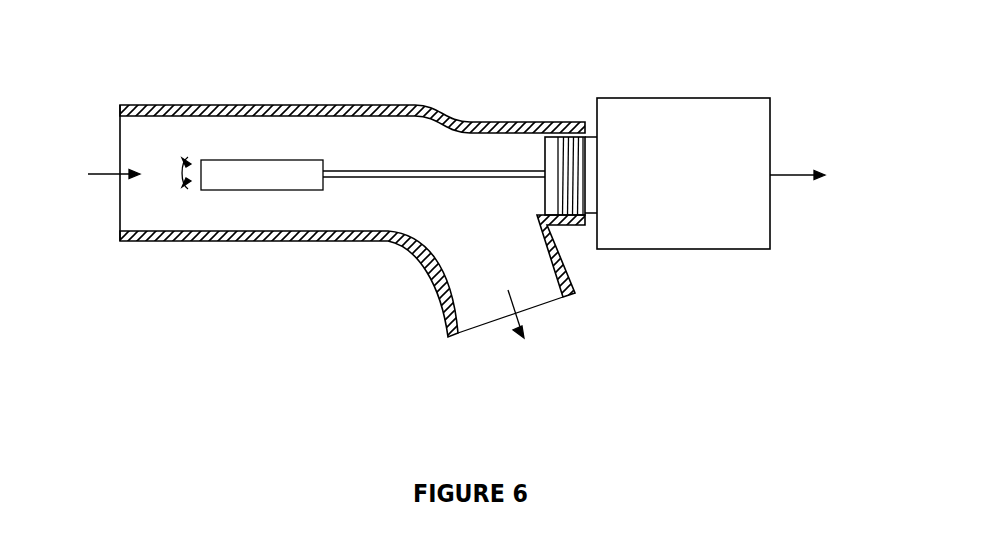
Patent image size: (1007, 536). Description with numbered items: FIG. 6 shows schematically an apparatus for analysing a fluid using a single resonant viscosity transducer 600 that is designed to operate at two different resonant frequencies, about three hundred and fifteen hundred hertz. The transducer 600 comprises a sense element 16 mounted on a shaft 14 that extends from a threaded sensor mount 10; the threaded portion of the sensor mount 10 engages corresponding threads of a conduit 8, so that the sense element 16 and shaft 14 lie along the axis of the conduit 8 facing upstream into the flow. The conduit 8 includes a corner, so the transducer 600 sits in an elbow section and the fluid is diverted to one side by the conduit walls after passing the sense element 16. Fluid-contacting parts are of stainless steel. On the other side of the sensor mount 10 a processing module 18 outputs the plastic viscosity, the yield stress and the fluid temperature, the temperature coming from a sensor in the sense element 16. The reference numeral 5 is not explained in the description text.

The conduit 8 is at (170, 105).
The flow channel 5 is at (306, 254).
The sense element 16 is at (252, 159).
The shaft 14 is at (370, 168).
The threaded sensor mount 10 is at (545, 197).
The processing module 18 is at (683, 173).
The resonant viscosity transducer 600 is at (743, 129).